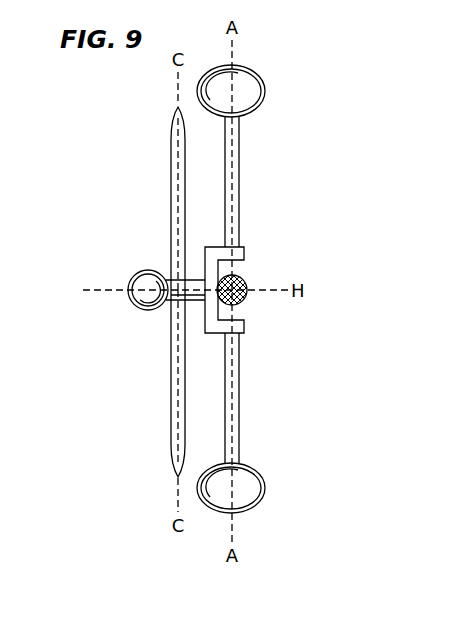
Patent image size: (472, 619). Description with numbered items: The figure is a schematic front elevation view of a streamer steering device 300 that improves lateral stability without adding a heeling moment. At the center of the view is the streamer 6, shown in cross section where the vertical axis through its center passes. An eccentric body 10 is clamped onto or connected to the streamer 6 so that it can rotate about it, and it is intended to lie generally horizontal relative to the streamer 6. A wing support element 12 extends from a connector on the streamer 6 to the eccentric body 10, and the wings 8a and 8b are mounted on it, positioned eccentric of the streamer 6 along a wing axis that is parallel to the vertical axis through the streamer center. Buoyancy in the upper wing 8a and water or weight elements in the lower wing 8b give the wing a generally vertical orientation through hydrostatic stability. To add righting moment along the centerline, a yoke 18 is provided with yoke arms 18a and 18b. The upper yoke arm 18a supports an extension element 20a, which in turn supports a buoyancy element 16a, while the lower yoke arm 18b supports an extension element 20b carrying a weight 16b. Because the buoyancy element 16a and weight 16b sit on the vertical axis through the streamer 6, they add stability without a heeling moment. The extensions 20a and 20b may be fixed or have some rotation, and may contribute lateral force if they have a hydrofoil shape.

The streamer steering device embodiment 300 is at (292, 197).
The buoyancy element 16a is at (258, 107).
The weight 16b is at (258, 470).
The extension element 20a is at (240, 163).
The extension element 20b is at (240, 402).
The yoke 18 is at (205, 258).
The yoke arm 18a is at (244, 251).
The yoke arm 18b is at (244, 330).
The streamer 6 is at (245, 300).
The wing 8a is at (171, 168).
The wing 8b is at (171, 418).
The eccentric body 10 is at (145, 272).
The wing support element 12 is at (195, 302).